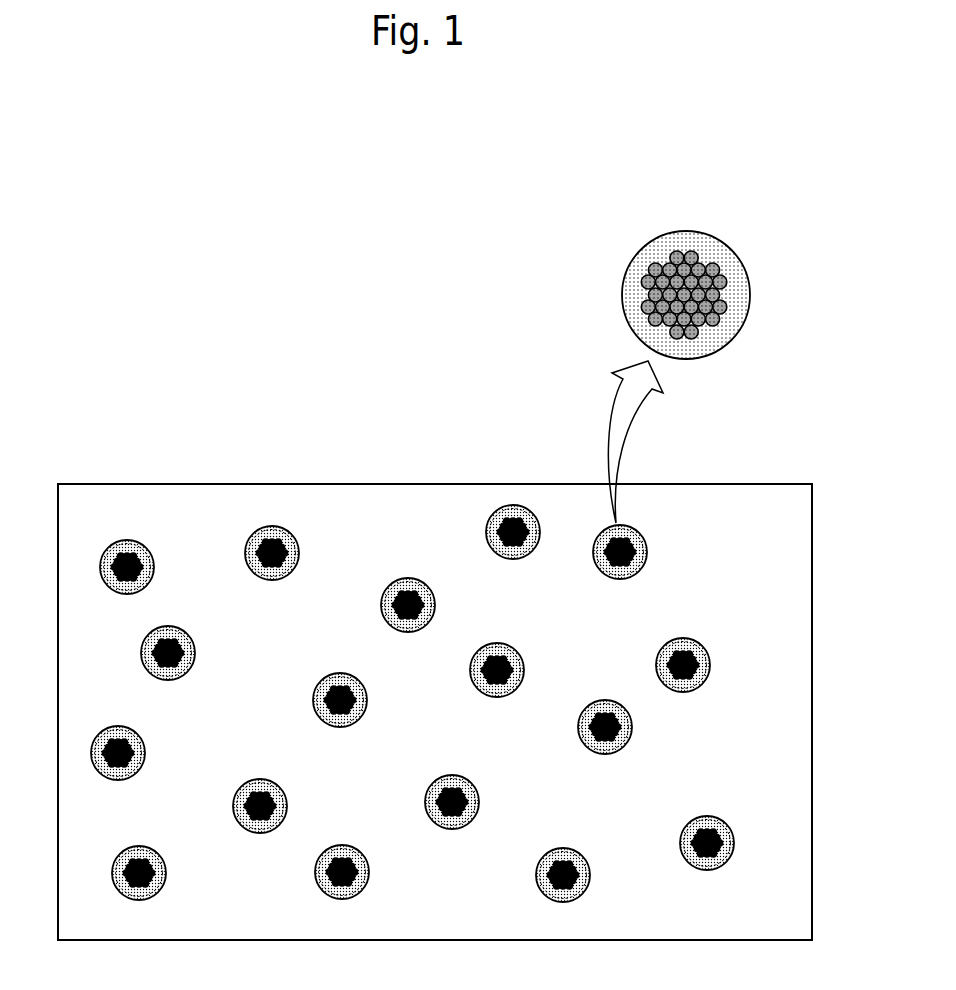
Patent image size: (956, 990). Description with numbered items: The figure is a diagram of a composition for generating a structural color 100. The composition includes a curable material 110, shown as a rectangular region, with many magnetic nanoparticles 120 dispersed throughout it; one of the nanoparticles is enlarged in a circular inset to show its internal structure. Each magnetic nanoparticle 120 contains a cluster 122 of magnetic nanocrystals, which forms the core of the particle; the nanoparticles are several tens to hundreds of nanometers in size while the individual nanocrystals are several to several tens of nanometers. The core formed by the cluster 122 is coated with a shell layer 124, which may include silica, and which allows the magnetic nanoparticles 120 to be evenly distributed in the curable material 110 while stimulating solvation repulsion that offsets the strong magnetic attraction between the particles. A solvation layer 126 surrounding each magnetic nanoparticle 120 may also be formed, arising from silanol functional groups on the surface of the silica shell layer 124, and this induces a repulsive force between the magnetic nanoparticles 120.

The composition for generating a structural color 100 is at (291, 212).
The curable material 110 is at (752, 572).
The magnetic nanoparticles 120 is at (400, 545).
The cluster of magnetic nanocrystals 122 is at (648, 263).
The shell layer 124 is at (713, 246).
The solvation layer 126 is at (513, 505).